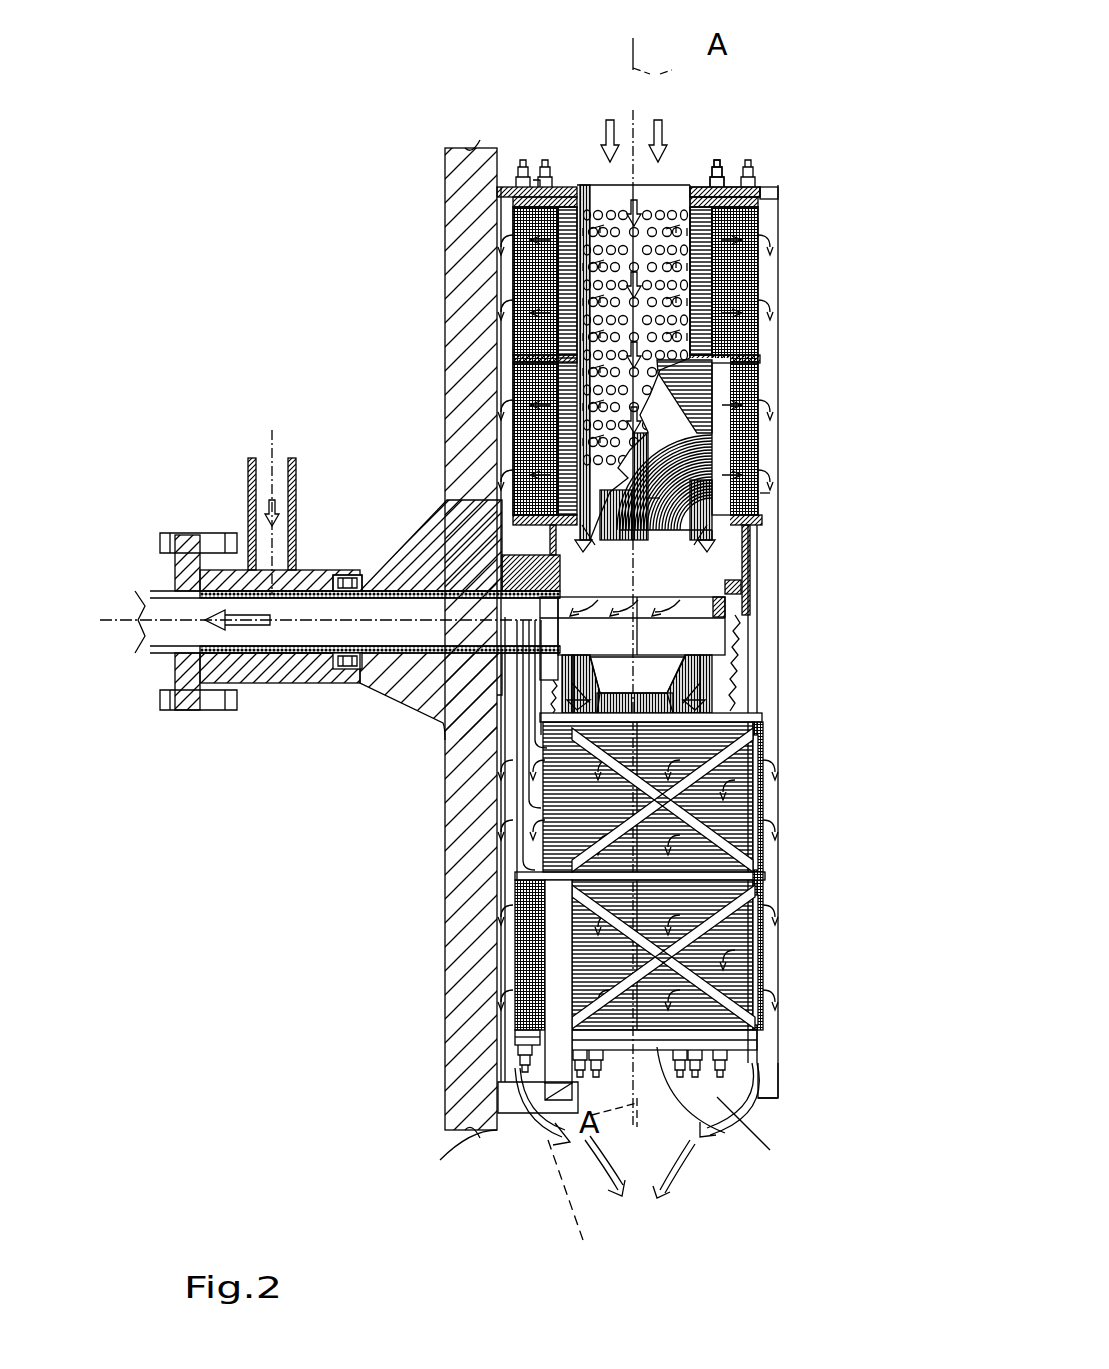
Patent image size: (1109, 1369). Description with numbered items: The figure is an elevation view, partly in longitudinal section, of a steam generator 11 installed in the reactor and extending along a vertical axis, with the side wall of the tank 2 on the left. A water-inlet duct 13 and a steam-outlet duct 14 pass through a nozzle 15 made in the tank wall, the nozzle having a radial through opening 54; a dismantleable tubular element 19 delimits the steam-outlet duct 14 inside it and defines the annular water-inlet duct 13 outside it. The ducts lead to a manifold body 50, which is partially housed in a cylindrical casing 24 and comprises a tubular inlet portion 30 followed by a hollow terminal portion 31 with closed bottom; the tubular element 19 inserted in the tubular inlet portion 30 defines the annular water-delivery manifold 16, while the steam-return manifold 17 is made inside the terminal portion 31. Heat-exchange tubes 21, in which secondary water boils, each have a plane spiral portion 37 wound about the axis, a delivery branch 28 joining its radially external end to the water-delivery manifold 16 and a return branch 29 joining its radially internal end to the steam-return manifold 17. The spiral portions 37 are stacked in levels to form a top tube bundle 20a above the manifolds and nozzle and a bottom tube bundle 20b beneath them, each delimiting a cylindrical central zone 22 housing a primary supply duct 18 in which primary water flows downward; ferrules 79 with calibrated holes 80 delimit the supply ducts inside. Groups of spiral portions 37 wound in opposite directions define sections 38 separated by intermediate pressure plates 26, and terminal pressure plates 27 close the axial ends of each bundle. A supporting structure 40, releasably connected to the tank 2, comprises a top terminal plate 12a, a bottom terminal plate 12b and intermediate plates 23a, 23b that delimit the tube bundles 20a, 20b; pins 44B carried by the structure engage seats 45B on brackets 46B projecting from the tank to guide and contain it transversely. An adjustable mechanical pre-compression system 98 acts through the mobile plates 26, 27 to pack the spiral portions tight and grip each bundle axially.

The tank 2 is at (450, 185).
The steam generator 11 is at (760, 265).
The top terminal plate 12a is at (770, 183).
The bottom terminal plate 12b is at (733, 1101).
The water-inlet duct 13 is at (310, 582).
The steam-outlet duct 14 is at (150, 605).
The nozzle 15 is at (430, 702).
The water-delivery manifold 16 is at (500, 585).
The steam-return manifold 17 is at (700, 610).
The primary supply duct 18 is at (760, 185).
The dismantleable tubular element 19 is at (367, 683).
The top tube bundle 20a is at (760, 378).
The bottom tube bundle 20b is at (765, 790).
The heat-exchange tube 21 is at (760, 447).
The central zone 22 is at (600, 200).
The intermediate plate 23a is at (762, 517).
The intermediate plate 23b is at (760, 718).
The cylindrical casing 24 is at (750, 563).
The intermediate pressure plate 26 is at (760, 358).
The terminal pressure plate 27 is at (765, 195).
The delivery branch 28 is at (520, 830).
The return branch 29 is at (760, 493).
The tubular inlet portion 30 is at (412, 707).
The hollow terminal portion 31 is at (740, 650).
The spiral portion 37 is at (513, 300).
The tube bundle section 38 is at (513, 278).
The supporting structure 40 is at (770, 1063).
The pin 44B is at (535, 1105).
The seat 45B is at (575, 1210).
The bracket 46B is at (500, 1128).
The manifold body 50 is at (505, 565).
The radial through opening 54 is at (300, 660).
The ferrule 79 is at (577, 178).
The calibrated hole 80 is at (662, 200).
The adjustable mechanical pre-compression system 98 is at (730, 1137).